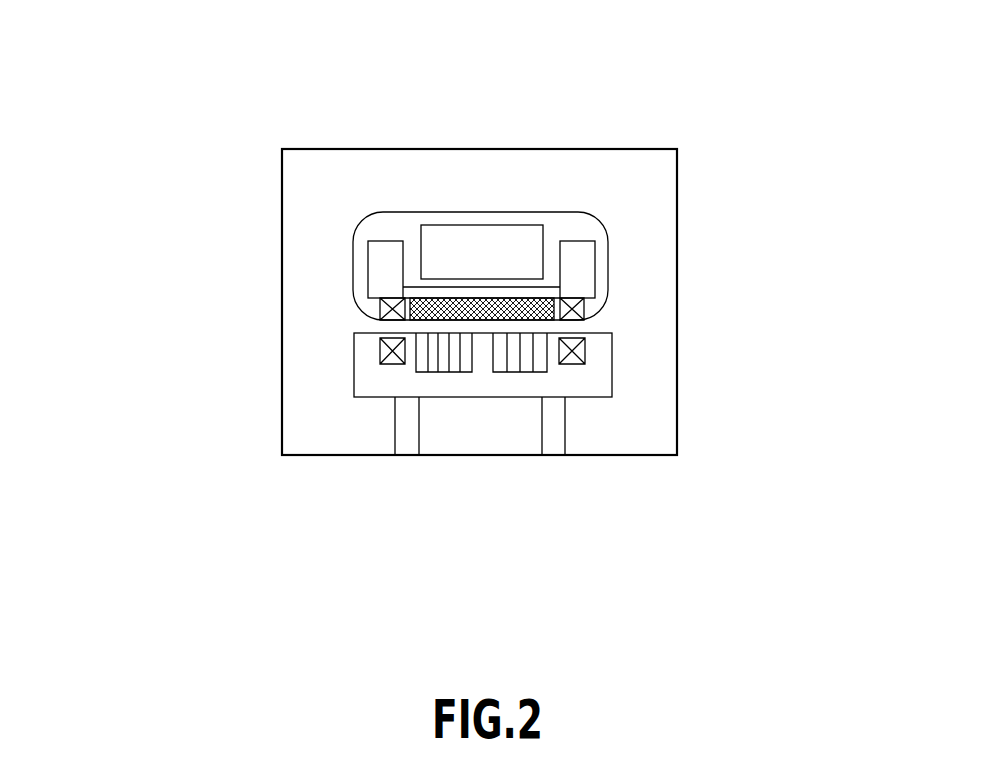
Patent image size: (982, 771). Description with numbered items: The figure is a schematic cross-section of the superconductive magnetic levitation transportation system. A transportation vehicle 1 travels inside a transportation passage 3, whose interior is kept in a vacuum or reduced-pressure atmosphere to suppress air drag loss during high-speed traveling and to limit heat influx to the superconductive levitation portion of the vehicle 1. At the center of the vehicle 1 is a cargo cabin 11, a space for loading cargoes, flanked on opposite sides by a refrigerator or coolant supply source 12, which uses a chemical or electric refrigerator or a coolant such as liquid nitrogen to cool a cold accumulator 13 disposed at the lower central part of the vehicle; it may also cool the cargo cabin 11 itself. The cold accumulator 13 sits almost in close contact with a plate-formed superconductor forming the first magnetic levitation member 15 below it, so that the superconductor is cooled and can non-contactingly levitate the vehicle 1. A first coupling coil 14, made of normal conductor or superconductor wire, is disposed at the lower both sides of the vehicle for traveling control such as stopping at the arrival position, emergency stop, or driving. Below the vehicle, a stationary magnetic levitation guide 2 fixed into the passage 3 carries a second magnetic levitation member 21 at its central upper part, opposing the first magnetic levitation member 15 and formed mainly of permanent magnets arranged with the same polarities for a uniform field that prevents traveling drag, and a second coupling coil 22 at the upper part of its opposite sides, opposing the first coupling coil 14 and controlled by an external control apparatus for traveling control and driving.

The transportation vehicle 1 is at (557, 233).
The magnetic levitation guide 2 is at (612, 358).
The transportation passage 3 is at (408, 148).
The cargo cabin 11 is at (471, 237).
The refrigerator or coolant supply source 12 is at (368, 272).
The cold accumulator 13 is at (515, 287).
The first coupling coil 14 is at (584, 300).
The first magnetic levitation member 15 is at (540, 320).
The second magnetic levitation member 21 is at (528, 350).
The second coupling coil 22 is at (380, 350).